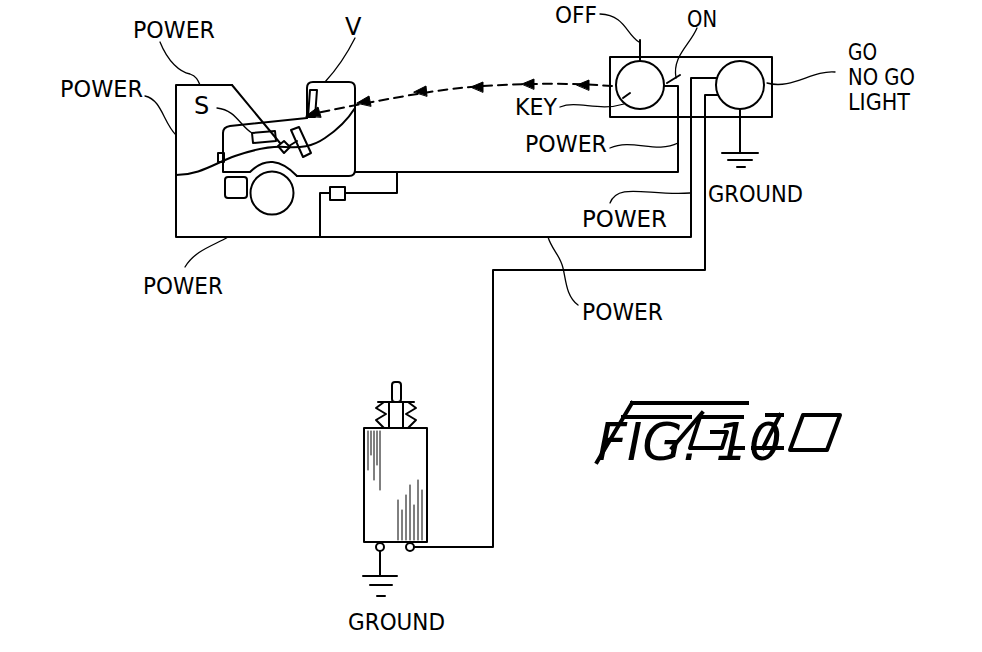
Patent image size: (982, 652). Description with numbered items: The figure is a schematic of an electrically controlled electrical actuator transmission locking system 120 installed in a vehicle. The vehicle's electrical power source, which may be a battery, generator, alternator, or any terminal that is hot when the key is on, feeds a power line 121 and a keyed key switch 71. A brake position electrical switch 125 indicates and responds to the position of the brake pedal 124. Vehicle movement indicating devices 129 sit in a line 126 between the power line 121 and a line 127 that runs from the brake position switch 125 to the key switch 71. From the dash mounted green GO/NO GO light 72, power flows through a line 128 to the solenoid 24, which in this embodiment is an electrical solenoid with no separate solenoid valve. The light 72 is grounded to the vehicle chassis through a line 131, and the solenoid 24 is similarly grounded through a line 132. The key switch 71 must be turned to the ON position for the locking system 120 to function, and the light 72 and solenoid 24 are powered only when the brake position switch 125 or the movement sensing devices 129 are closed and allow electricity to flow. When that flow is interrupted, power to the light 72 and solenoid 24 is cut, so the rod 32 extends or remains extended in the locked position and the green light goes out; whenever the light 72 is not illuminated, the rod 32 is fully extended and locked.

The electrical actuator transmission locking system 120 is at (283, 275).
The power line 121 is at (235, 85).
The brake pedal 124 is at (360, 103).
The brake position electrical switch 125 is at (176, 175).
The line 126 is at (400, 190).
The line 127 is at (417, 172).
The line 128 is at (707, 263).
The vehicle movement indicating devices 129 is at (345, 196).
The line 131 is at (745, 135).
The line 132 is at (378, 560).
The solenoid 24 is at (427, 467).
The rod 32 is at (393, 383).
The key switch 71 is at (614, 70).
The light 72 is at (772, 57).